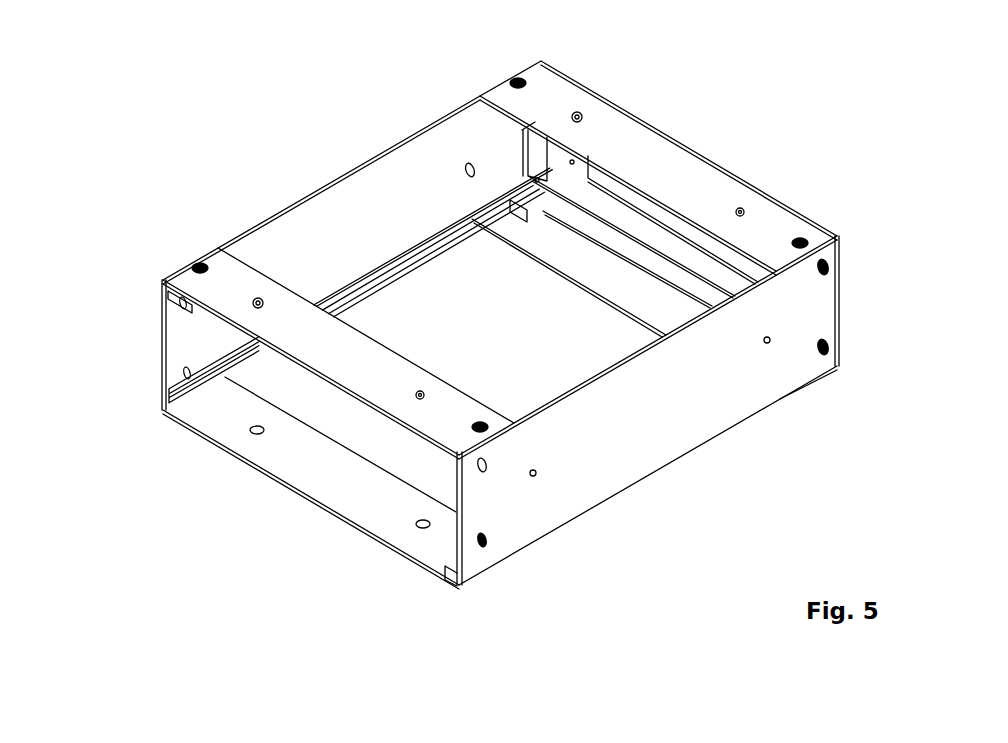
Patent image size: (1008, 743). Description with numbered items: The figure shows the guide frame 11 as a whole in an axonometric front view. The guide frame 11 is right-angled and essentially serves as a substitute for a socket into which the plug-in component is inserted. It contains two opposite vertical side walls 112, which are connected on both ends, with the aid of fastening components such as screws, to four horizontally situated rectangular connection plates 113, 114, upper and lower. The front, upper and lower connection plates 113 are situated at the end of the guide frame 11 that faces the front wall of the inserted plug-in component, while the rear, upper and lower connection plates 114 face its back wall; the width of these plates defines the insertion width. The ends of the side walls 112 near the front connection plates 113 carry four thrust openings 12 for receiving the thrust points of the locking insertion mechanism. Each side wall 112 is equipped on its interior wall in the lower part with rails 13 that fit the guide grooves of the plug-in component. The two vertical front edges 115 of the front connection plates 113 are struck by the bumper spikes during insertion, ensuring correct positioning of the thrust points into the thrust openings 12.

The guide frame 11 is at (709, 118).
The thrust openings 12 is at (180, 373).
The rails 13 is at (367, 287).
The side walls 112 is at (440, 201).
The front connection plates 113 is at (373, 367).
The rear connection plates 114 is at (686, 177).
The vertical front edges 115 is at (452, 520).